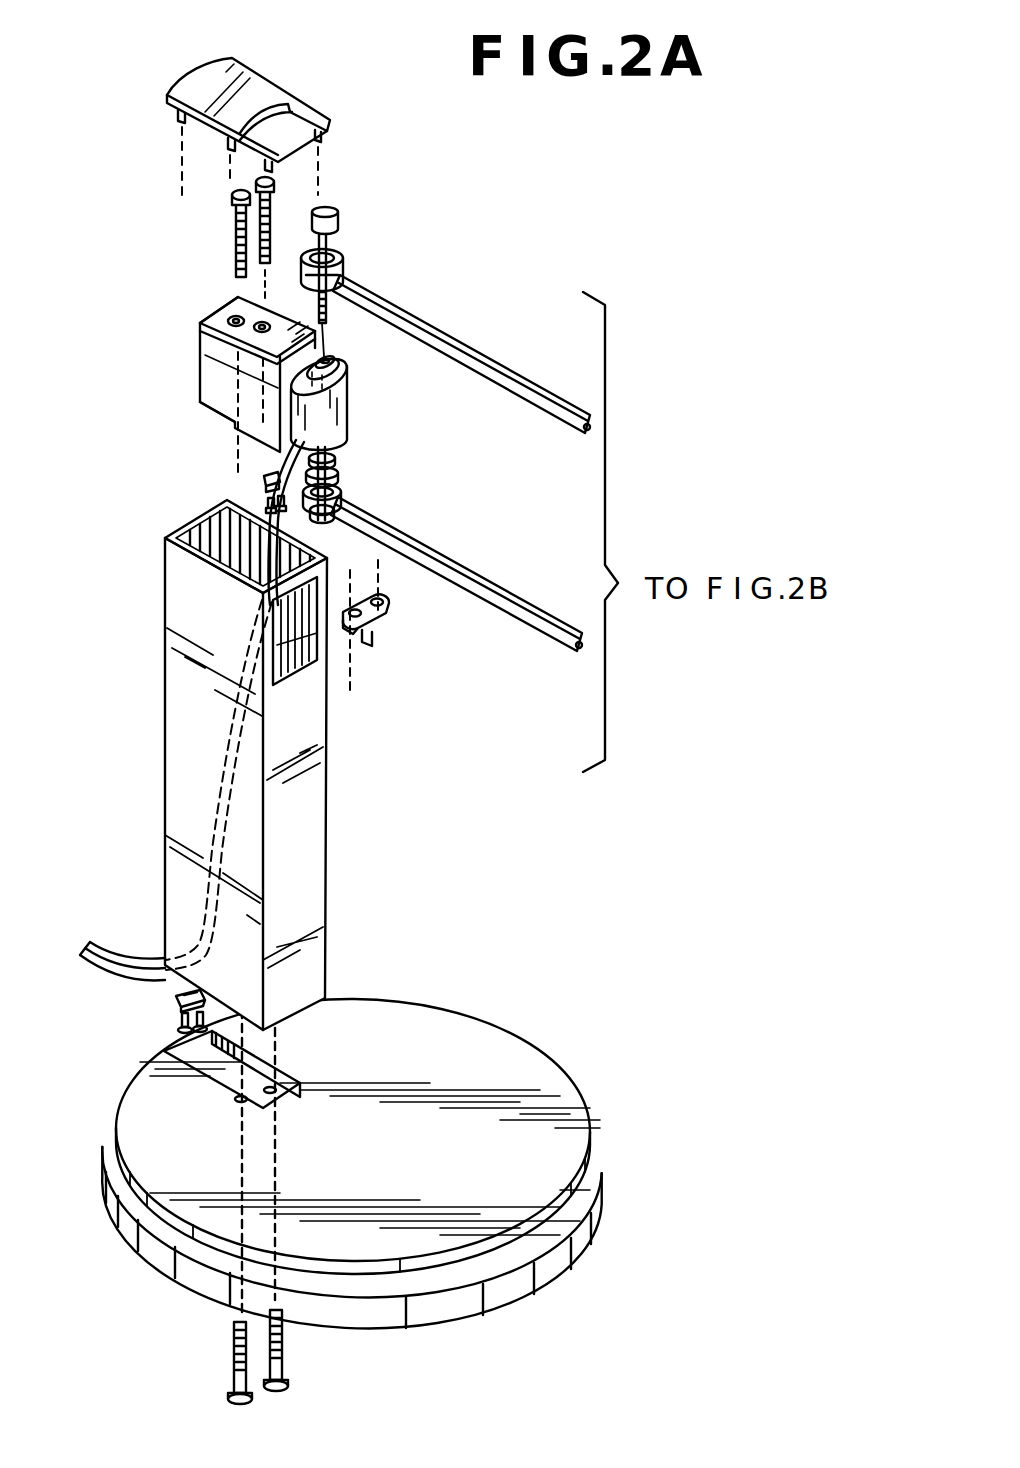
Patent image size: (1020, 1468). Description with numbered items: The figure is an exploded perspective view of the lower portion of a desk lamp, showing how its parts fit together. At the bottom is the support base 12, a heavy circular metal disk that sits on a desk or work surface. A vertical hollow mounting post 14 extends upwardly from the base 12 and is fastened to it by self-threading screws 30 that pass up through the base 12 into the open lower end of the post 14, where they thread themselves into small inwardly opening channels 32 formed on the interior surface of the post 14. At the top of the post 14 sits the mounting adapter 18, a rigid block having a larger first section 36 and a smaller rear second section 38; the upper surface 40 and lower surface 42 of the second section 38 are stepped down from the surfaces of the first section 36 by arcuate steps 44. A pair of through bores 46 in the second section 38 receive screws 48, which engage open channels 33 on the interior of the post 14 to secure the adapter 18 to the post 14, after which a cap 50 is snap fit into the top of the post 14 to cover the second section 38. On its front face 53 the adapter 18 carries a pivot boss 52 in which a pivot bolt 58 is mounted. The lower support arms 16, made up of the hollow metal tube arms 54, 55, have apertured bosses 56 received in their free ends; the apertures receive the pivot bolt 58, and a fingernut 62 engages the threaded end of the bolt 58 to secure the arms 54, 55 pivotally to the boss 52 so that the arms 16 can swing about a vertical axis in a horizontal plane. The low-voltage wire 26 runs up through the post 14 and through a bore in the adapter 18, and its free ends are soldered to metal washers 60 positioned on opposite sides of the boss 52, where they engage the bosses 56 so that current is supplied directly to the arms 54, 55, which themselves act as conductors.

The support base 12 is at (604, 1152).
The mounting post 14 is at (326, 845).
The lower support arms 16 is at (472, 258).
The mounting adapter 18 is at (205, 382).
The wire 26 is at (105, 940).
The screws 30 is at (285, 1355).
The channels 32 is at (200, 510).
The open channels 33 is at (300, 675).
The first section 36 is at (323, 332).
The second section 38 is at (220, 310).
The upper surface 40 is at (198, 324).
The lower surface 42 is at (232, 425).
The arcuate steps 44 is at (242, 292).
The through bores 46 is at (208, 352).
The screws 48 is at (255, 208).
The cap 50 is at (202, 78).
The pivot boss 52 is at (352, 452).
The front face 53 is at (348, 368).
The arm 54 is at (471, 352).
The arm 55 is at (477, 582).
The bosses 56 is at (338, 258).
The pivot bolt 58 is at (337, 235).
The metal washers 60 is at (350, 414).
The fingernut 62 is at (390, 553).